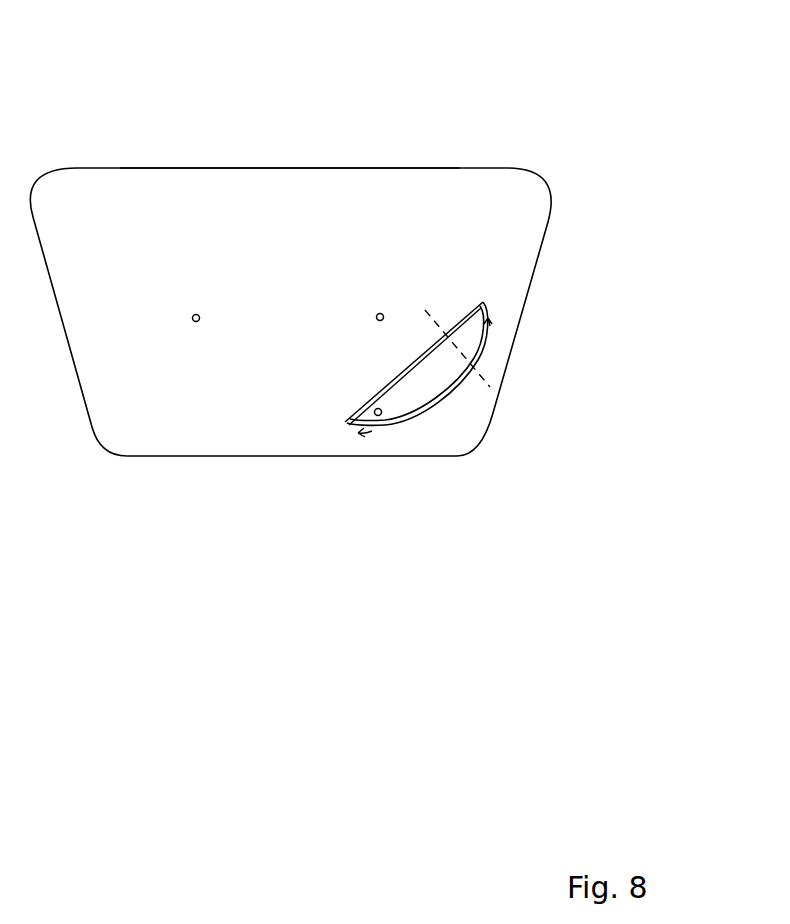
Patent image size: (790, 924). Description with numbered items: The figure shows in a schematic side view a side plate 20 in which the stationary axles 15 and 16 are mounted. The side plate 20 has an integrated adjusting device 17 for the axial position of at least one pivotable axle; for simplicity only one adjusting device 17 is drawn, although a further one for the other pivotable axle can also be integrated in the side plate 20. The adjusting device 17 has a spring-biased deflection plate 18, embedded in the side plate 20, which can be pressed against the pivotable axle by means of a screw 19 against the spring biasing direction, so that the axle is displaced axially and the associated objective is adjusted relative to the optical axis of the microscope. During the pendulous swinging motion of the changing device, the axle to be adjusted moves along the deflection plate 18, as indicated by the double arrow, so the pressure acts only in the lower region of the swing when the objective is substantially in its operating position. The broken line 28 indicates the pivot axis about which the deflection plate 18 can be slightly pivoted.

The stationary axle 15 is at (379, 313).
The stationary axle 16 is at (194, 315).
The adjusting device 17 is at (568, 218).
The deflection plate 18 is at (476, 348).
The screw 19 is at (379, 408).
The side plate 20 is at (232, 173).
The broken line 28 is at (457, 345).